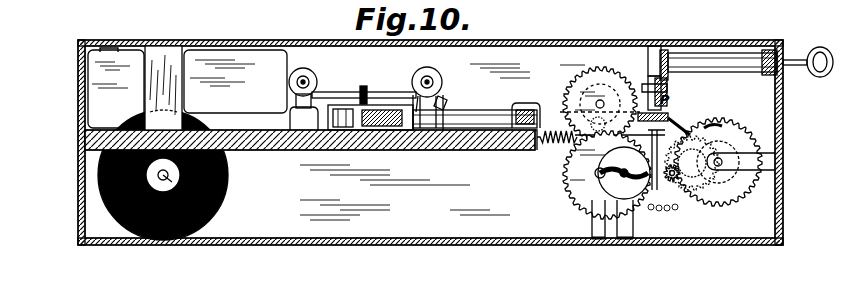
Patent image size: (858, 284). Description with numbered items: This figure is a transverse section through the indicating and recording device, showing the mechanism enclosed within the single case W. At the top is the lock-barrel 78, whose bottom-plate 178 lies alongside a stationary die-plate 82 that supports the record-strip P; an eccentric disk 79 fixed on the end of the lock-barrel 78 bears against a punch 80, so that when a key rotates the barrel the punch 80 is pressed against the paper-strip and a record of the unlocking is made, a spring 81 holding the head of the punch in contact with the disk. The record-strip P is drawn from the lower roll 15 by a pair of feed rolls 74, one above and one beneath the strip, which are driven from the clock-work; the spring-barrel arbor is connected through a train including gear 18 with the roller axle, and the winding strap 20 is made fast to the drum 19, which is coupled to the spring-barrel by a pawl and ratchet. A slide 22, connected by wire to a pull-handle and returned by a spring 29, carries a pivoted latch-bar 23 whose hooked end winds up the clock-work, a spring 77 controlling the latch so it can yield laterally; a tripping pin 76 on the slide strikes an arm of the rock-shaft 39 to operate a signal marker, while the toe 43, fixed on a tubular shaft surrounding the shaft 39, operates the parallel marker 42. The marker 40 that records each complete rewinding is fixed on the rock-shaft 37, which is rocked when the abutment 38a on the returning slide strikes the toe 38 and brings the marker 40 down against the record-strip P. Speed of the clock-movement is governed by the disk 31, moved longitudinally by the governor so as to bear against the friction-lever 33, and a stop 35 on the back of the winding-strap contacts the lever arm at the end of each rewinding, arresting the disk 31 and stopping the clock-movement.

The lower roll 15 is at (212, 197).
The gear 18 is at (690, 190).
The drum 19 is at (735, 120).
The strap 20 is at (621, 125).
The slide 22 is at (537, 150).
The latch-bar 23 is at (494, 114).
The spring 29 is at (557, 147).
The disk 31 is at (640, 200).
The friction-lever 33 is at (665, 192).
The stop 35 is at (676, 128).
The rock-shaft 37 is at (432, 70).
The toe 38 is at (444, 98).
The abutment 38a is at (408, 92).
The rock-shaft 39 is at (293, 70).
The marker 40 is at (410, 98).
The marker 42 is at (347, 92).
The toe 43 is at (300, 100).
The feed rolls 74 is at (590, 78).
The tripping pin 76 is at (527, 103).
The spring 77 is at (350, 128).
The lock-barrel 78 is at (735, 53).
The eccentric disk 79 is at (652, 48).
The punch 80 is at (667, 88).
The spring 81 is at (656, 88).
The die-plate 82 is at (645, 112).
The bottom-plate 178 is at (660, 44).
The record-strip P is at (270, 111).
The case W is at (488, 240).